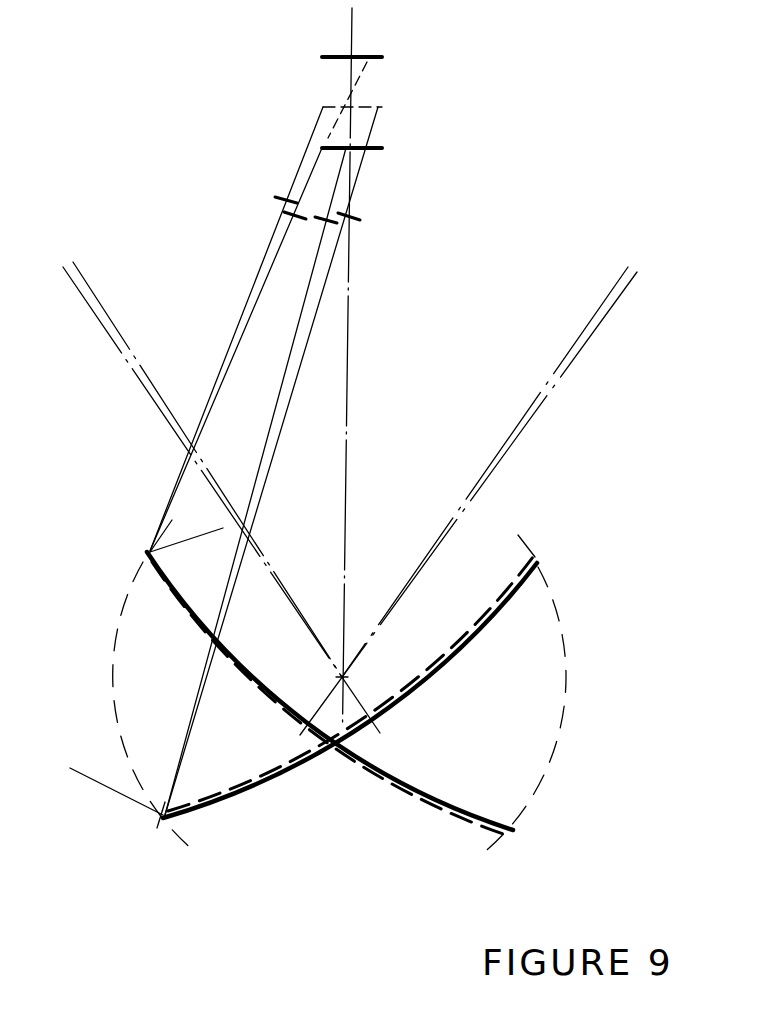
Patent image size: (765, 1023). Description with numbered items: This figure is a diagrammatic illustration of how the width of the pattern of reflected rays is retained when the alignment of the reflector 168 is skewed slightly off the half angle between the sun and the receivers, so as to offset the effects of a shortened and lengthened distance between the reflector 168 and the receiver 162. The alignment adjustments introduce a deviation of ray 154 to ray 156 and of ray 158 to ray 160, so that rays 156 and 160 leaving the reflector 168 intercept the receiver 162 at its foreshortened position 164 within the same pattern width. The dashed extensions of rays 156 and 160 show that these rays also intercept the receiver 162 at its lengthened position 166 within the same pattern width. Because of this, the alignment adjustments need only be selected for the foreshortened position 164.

The ray 154 is at (262, 265).
The ray 156 is at (265, 281).
The ray 158 is at (313, 362).
The ray 160 is at (290, 344).
The receiver 162 is at (333, 103).
The foreshortened position 164 is at (374, 152).
The lengthened position 166 is at (374, 61).
The reflector 168 is at (268, 784).